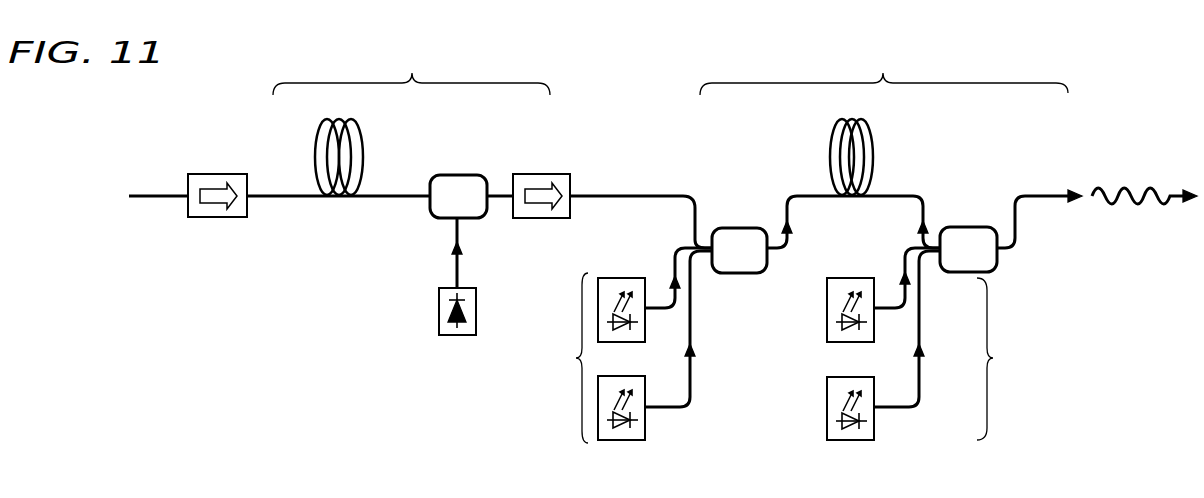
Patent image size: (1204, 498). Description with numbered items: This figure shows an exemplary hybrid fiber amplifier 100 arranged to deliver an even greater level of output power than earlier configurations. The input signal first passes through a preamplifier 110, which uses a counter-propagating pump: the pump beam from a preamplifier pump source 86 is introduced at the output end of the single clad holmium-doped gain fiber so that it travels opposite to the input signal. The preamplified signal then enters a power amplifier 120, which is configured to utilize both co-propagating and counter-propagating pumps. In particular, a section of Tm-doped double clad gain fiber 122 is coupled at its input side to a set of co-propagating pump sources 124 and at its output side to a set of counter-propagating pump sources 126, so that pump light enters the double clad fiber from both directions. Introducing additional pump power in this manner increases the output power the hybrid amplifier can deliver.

The hybrid fiber amplifier 100 is at (100, 118).
The preamplifier 110 is at (427, 63).
The power amplifier 120 is at (900, 63).
The Tm-doped double clad gain fiber 122 is at (830, 150).
The set of co-propagating pump sources 124 is at (565, 370).
The set of counter-propagating pump sources 126 is at (1030, 371).
The preamplifier pump source 86 is at (439, 310).